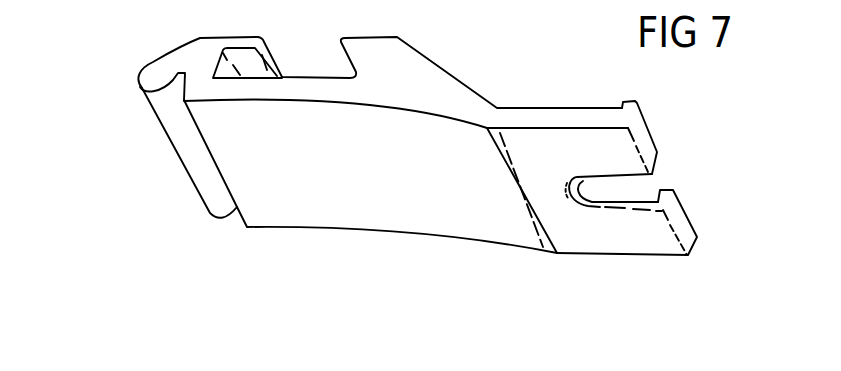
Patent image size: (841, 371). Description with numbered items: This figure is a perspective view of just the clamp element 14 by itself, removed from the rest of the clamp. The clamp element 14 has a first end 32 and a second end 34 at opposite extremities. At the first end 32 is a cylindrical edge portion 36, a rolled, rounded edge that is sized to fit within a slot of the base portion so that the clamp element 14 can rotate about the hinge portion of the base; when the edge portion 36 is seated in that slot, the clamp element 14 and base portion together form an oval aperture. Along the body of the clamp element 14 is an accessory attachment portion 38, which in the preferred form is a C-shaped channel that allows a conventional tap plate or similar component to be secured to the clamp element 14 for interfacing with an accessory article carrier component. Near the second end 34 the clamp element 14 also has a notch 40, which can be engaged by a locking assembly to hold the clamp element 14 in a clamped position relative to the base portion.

The clamp element 14 is at (104, 65).
The first end 32 is at (180, 56).
The second end 34 is at (604, 117).
The cylindrical edge portion 36 is at (153, 85).
The accessory attachment portion 38 is at (438, 88).
The notch 40 is at (657, 243).